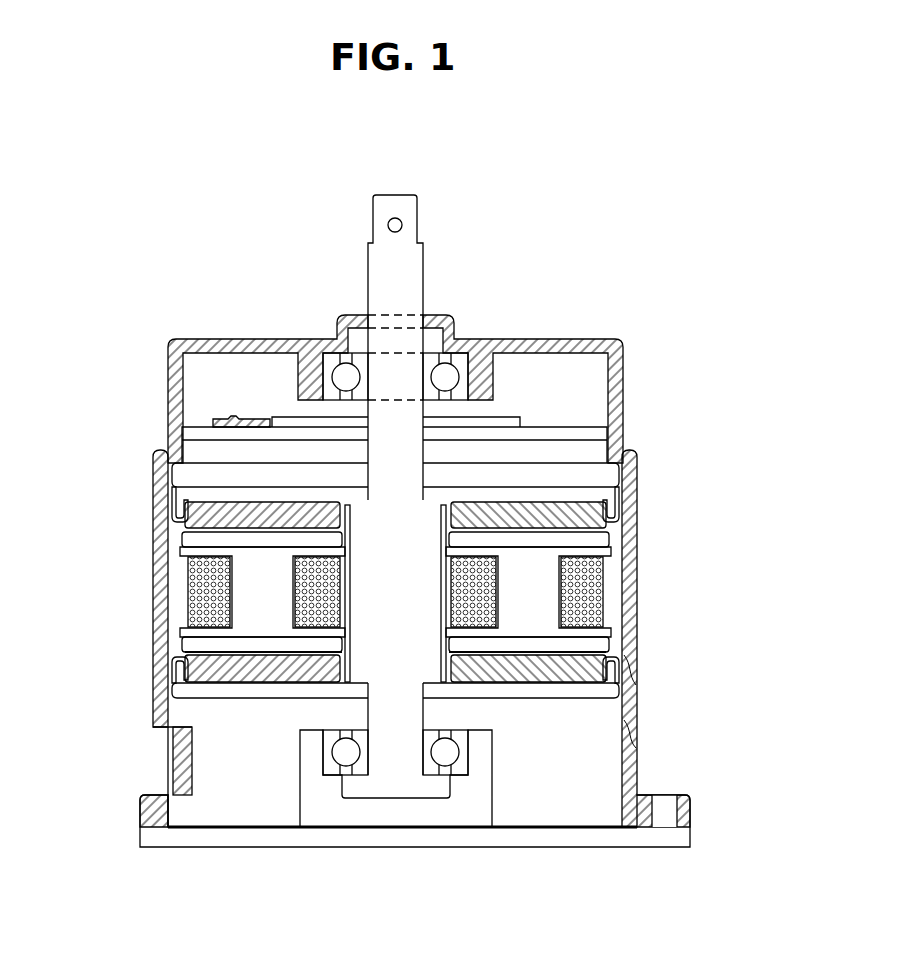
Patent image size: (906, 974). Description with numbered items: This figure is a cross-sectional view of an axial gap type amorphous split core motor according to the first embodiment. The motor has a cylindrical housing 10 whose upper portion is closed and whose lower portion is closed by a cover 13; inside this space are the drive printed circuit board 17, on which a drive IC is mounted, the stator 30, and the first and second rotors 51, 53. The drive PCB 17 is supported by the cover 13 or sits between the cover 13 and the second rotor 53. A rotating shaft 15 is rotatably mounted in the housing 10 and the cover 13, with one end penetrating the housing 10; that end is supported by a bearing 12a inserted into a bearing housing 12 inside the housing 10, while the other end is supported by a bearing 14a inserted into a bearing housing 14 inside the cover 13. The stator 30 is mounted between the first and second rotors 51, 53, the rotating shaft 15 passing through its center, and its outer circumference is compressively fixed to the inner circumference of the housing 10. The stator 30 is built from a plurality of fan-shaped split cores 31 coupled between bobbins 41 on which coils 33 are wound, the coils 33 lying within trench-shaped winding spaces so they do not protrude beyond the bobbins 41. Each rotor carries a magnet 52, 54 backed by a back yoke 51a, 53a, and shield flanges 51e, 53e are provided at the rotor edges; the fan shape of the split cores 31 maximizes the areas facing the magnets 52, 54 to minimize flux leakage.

The housing 10 is at (637, 490).
The bearing housing 12 is at (307, 377).
The bearing 12a is at (330, 358).
The cover 13 is at (605, 838).
The bearing housing 14 is at (387, 810).
The bearing 14a is at (333, 772).
The rotating shaft 15 is at (410, 433).
The drive printed circuit board 17 is at (278, 418).
The stator 30 is at (397, 656).
The split core 31 is at (262, 637).
The coil 33 is at (190, 612).
The bobbin 41 is at (187, 553).
The first rotor 51 is at (336, 482).
The back yoke 51a is at (207, 478).
The shield flange 51e is at (180, 512).
The magnet 52 is at (188, 525).
The second rotor 53 is at (333, 712).
The back yoke 53a is at (213, 692).
The shield flange 53e is at (178, 668).
The magnet 54 is at (193, 662).